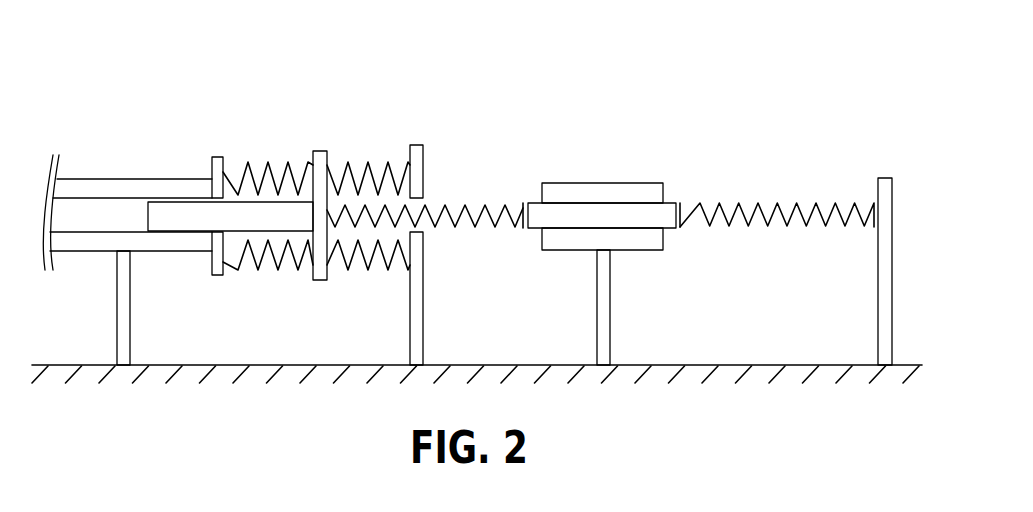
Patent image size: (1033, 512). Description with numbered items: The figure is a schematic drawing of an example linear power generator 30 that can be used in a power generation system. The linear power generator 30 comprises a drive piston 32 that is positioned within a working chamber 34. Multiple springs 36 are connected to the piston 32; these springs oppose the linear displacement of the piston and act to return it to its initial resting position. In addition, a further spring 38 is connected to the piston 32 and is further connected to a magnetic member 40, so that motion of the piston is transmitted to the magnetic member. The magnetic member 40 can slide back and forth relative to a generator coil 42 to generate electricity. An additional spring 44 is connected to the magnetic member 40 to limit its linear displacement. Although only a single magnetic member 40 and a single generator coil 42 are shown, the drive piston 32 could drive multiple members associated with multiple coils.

The linear power generator 30 is at (158, 59).
The drive piston 32 is at (162, 218).
The working chamber 34 is at (137, 181).
The springs 36 is at (352, 158).
The further spring 38 is at (477, 205).
The magnetic member 40 is at (670, 218).
The generator coil 42 is at (573, 183).
The additional spring 44 is at (837, 222).